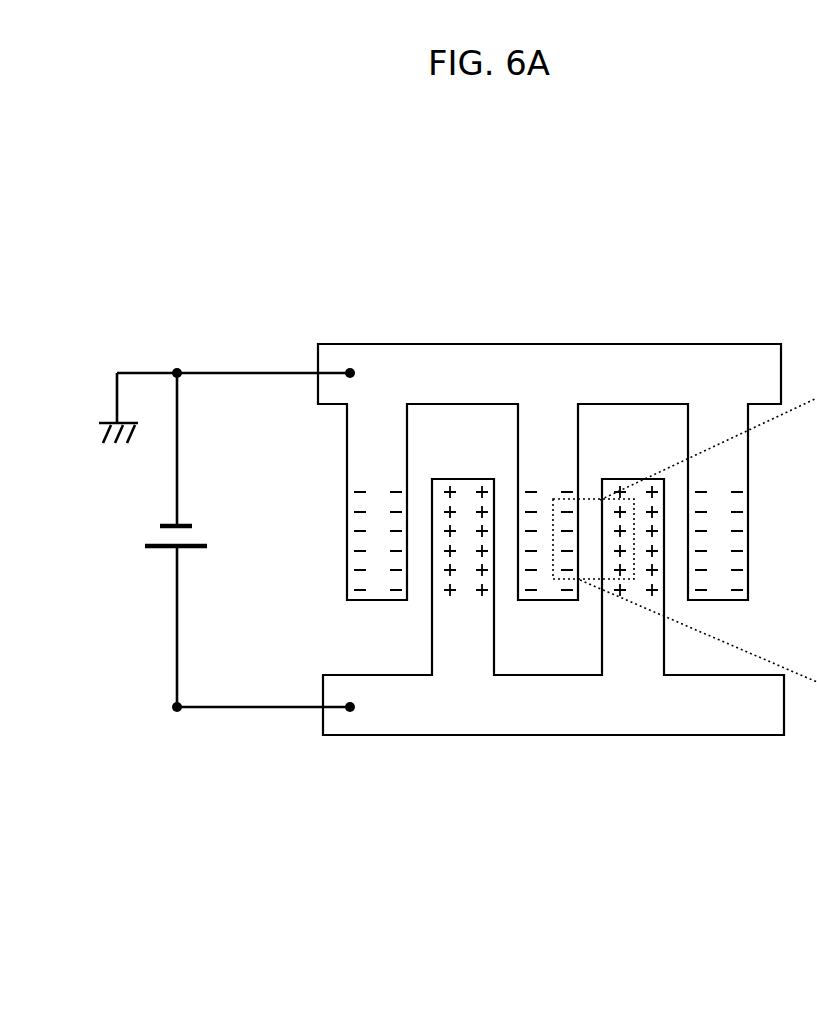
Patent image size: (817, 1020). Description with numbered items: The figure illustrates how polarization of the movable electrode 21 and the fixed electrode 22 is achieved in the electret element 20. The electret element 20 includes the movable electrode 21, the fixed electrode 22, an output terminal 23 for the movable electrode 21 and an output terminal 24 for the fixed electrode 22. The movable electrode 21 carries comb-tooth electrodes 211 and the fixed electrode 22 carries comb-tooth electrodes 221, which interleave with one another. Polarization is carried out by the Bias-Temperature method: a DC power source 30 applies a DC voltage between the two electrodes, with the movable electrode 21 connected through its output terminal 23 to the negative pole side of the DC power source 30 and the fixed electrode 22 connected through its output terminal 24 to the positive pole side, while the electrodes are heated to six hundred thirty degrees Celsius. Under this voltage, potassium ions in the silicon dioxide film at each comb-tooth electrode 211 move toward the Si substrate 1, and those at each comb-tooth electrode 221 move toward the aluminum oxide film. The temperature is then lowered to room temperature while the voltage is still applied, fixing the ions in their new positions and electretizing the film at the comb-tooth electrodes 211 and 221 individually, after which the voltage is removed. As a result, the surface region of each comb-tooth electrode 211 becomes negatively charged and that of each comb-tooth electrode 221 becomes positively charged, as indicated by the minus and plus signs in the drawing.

The Si substrate 1 is at (567, 526).
The electret element 20 is at (661, 251).
The movable electrode 21 is at (412, 360).
The comb-tooth electrode 211 is at (553, 475).
The fixed electrode 22 is at (422, 715).
The comb-tooth electrode 221 is at (632, 635).
The output terminal 23 is at (181, 369).
The output terminal 24 is at (181, 712).
The DC power source 30 is at (178, 522).